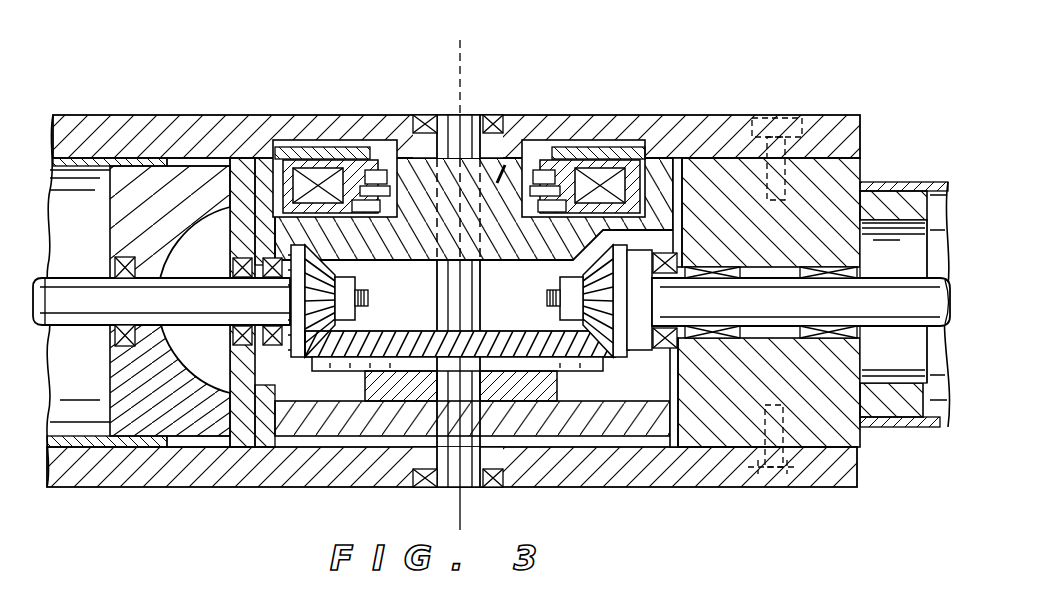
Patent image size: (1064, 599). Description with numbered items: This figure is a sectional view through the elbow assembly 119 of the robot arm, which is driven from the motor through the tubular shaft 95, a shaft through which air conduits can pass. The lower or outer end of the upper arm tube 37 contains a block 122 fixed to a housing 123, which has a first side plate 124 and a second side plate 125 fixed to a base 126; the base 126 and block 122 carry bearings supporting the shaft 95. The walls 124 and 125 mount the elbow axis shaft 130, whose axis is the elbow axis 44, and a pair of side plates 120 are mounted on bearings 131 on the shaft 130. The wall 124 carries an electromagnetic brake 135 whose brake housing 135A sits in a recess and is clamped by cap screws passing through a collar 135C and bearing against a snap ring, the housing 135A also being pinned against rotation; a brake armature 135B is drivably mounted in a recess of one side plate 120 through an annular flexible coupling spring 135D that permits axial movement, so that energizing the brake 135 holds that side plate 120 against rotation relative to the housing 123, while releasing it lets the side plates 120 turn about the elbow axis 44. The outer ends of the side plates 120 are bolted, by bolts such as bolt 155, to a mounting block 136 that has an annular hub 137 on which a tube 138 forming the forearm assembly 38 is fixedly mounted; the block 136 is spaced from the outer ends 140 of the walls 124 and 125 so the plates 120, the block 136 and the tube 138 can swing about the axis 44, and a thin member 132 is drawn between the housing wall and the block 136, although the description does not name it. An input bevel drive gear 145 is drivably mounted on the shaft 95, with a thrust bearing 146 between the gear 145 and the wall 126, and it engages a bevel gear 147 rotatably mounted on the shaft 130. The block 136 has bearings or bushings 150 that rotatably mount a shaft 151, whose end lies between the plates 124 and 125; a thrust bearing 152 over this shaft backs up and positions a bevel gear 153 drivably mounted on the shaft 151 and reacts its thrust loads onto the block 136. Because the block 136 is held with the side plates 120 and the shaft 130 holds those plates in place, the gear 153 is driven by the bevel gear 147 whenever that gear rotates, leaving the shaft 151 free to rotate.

The upper arm tube 37 is at (86, 160).
The forearm assembly 38 is at (880, 430).
The elbow axis 44 is at (462, 512).
The shaft 95 is at (66, 302).
The elbow assembly 119 is at (362, 97).
The side plates 120 is at (163, 130).
The block 122 is at (147, 412).
The housing 123 is at (500, 178).
The first side plate 124 is at (412, 172).
The second side plate 125 is at (603, 422).
The base 126 is at (248, 167).
The elbow axis shaft 130 is at (468, 125).
The bearings 131 is at (424, 130).
The spacer 132 is at (740, 159).
The electromagnetic brake 135 is at (333, 130).
The brake housing 135A is at (302, 183).
The brake armature 135B is at (627, 140).
The collar 135C is at (542, 172).
The annular flexible coupling spring 135D is at (620, 140).
The mounting block 136 is at (805, 182).
The annular hub 137 is at (896, 207).
The tube 138 is at (912, 428).
The outer ends 140 is at (657, 167).
The input bevel drive gear 145 is at (230, 207).
The thrust bearing 146 is at (232, 331).
The bevel gear 147 is at (503, 327).
The bearings or bushings 150 is at (837, 338).
The shaft 151 is at (912, 262).
The thrust bearing 152 is at (673, 348).
The bevel gear 153 is at (620, 353).
The bolt 155 is at (800, 140).